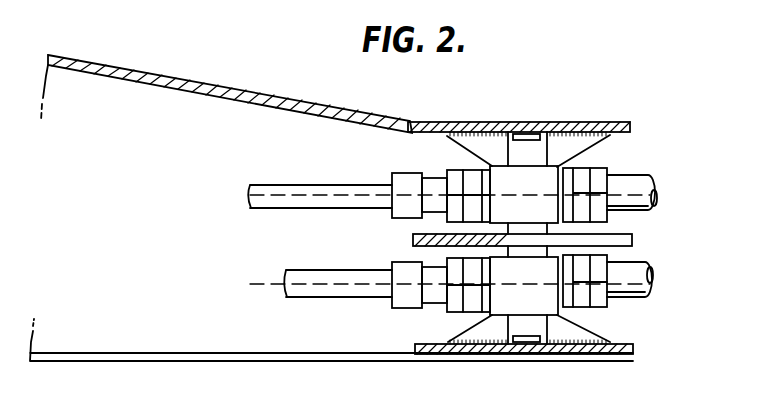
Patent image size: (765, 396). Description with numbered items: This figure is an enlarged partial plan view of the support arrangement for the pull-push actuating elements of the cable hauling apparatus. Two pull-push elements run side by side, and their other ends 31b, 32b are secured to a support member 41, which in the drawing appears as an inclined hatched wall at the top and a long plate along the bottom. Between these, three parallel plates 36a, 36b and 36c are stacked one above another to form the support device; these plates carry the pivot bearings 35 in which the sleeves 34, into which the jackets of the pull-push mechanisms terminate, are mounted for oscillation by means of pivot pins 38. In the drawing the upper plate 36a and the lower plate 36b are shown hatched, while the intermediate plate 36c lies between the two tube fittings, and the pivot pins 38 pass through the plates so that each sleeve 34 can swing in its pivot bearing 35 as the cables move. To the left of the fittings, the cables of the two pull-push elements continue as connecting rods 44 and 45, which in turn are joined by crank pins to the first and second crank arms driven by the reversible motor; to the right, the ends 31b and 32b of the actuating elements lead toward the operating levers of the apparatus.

The support member 41 is at (211, 91).
The parallel plate 36a is at (432, 109).
The parallel plate 36c is at (413, 243).
The parallel plate 36b is at (575, 350).
The pivot pin 38 is at (528, 134).
The pivot bearing 35 is at (577, 135).
The sleeve 34 is at (602, 135).
The connecting rod 45 is at (313, 190).
The connecting rod 44 is at (360, 287).
The other end of pull-push actuating element 32b is at (627, 185).
The other end of pull-push actuating element 31b is at (628, 287).